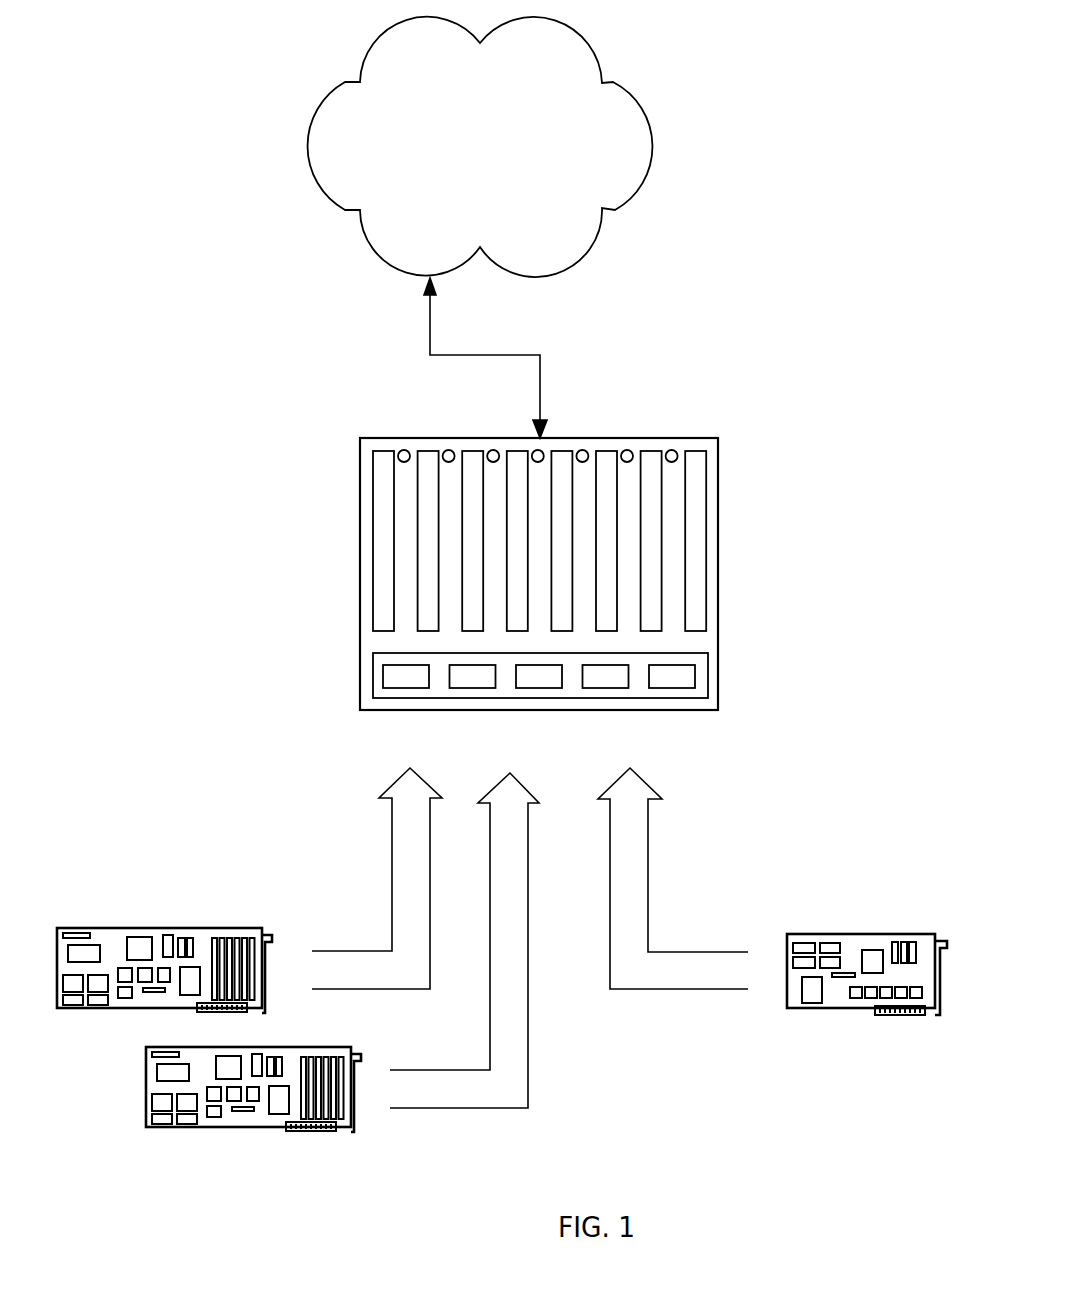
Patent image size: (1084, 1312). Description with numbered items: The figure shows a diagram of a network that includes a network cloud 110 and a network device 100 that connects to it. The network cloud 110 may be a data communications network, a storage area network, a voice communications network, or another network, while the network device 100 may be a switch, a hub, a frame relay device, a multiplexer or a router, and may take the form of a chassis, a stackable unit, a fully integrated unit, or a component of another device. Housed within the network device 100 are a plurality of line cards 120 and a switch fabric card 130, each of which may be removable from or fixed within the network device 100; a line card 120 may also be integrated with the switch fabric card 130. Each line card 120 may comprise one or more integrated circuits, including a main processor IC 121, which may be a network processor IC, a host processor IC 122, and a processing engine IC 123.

The network device 100 is at (718, 575).
The network cloud 110 is at (652, 147).
The line card 120 is at (179, 932).
The main processor IC 121 is at (143, 937).
The host processor IC 122 is at (167, 935).
The processing engine IC 123 is at (193, 995).
The switch fabric card 130 is at (858, 1008).